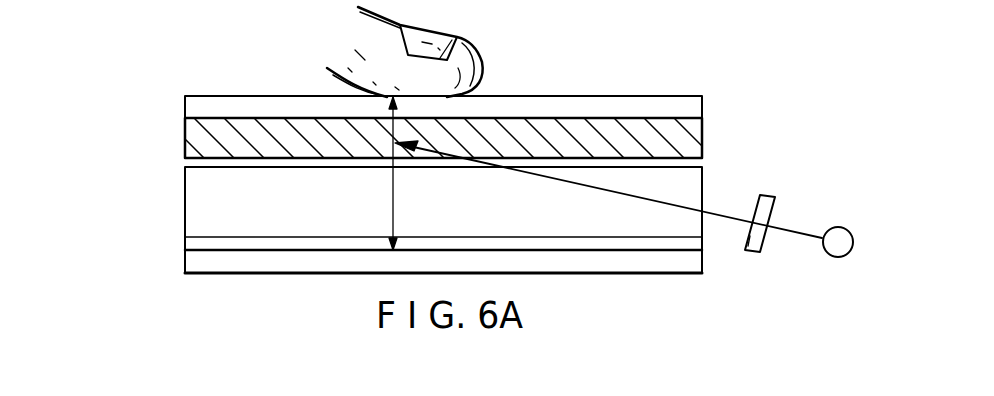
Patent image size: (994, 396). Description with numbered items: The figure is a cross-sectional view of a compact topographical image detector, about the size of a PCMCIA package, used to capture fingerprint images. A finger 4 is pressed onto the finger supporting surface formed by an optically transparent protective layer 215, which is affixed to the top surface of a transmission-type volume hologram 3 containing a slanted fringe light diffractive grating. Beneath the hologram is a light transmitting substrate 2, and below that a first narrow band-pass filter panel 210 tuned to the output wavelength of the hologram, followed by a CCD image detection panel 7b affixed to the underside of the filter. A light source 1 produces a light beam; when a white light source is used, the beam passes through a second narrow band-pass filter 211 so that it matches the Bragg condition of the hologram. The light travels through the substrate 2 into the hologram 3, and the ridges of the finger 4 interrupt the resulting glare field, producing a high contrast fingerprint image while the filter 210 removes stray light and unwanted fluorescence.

The finger 4 is at (473, 52).
The optically transparent protective layer 215 is at (185, 103).
The transmission-type volume hologram 3 is at (192, 135).
The light transmitting substrate 2 is at (197, 195).
The first narrow band-pass filter panel 210 is at (197, 240).
The CCD image detection panel 7b is at (197, 258).
The second narrow band-pass filter 211 is at (753, 253).
The light source 1 is at (830, 249).